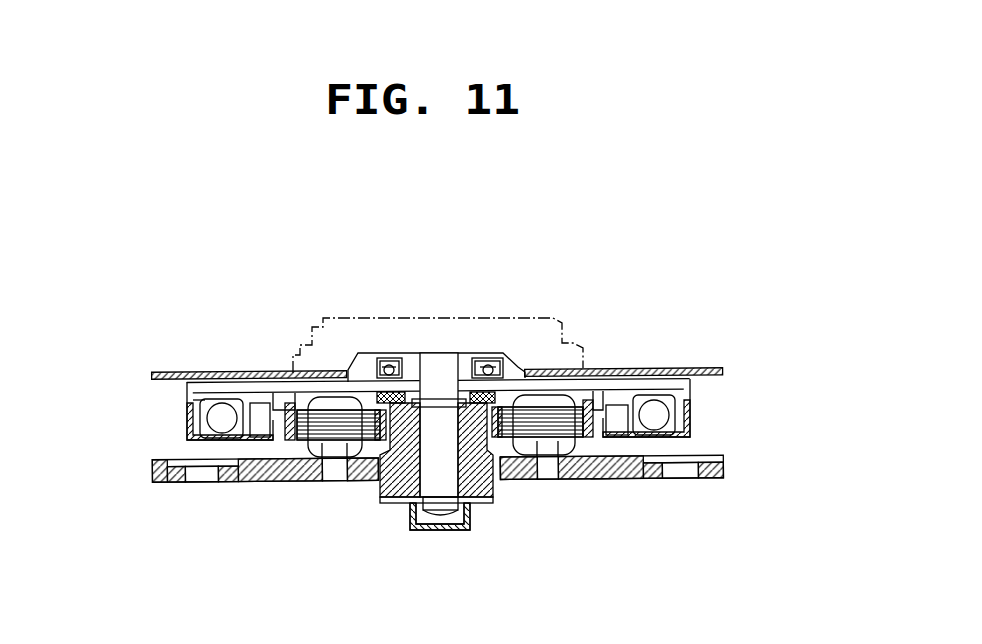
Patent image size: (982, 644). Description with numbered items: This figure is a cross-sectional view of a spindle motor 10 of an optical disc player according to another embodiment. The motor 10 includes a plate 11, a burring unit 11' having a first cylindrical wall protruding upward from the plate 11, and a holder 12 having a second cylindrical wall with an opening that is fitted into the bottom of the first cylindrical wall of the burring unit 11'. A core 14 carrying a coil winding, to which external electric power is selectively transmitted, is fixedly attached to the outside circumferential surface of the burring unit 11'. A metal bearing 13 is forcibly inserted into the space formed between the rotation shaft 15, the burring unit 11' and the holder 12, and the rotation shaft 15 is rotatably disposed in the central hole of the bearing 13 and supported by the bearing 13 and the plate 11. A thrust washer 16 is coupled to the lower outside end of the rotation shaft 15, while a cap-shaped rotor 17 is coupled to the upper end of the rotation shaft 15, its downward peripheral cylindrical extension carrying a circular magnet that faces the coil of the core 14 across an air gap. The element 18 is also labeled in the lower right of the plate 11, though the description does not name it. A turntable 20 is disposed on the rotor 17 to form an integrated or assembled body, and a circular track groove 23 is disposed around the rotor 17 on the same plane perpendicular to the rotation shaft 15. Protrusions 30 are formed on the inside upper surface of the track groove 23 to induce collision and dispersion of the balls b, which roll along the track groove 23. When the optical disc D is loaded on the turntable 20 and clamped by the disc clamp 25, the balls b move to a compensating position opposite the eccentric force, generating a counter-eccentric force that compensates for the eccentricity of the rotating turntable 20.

The motor 10 is at (140, 439).
The plate 11 is at (438, 511).
The burring unit 11' is at (536, 514).
The holder 12 is at (478, 506).
The metal bearing 13 is at (383, 484).
The core 14 is at (556, 402).
The rotation shaft 15 is at (438, 392).
The thrust washer 16 is at (382, 498).
The rotor 17 is at (285, 390).
The hole 18 is at (600, 480).
The turntable 20 is at (222, 392).
The track groove 23 is at (205, 400).
The disc clamp 25 is at (555, 318).
The protrusions 30 is at (653, 400).
The balls b is at (220, 418).
The optical disc D is at (693, 370).